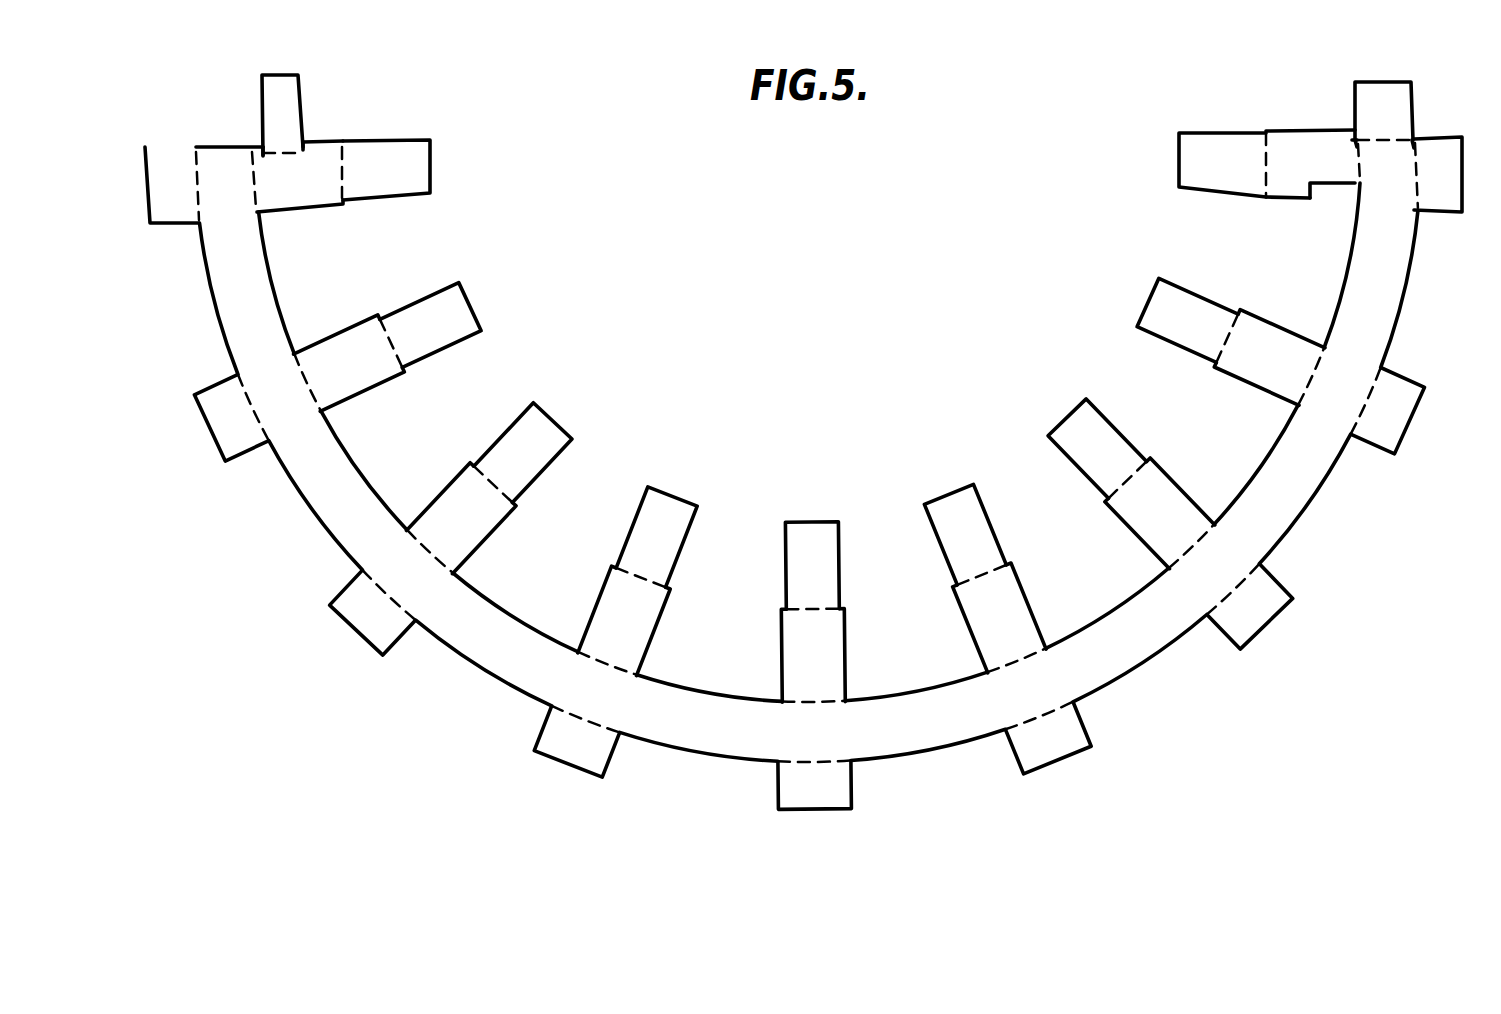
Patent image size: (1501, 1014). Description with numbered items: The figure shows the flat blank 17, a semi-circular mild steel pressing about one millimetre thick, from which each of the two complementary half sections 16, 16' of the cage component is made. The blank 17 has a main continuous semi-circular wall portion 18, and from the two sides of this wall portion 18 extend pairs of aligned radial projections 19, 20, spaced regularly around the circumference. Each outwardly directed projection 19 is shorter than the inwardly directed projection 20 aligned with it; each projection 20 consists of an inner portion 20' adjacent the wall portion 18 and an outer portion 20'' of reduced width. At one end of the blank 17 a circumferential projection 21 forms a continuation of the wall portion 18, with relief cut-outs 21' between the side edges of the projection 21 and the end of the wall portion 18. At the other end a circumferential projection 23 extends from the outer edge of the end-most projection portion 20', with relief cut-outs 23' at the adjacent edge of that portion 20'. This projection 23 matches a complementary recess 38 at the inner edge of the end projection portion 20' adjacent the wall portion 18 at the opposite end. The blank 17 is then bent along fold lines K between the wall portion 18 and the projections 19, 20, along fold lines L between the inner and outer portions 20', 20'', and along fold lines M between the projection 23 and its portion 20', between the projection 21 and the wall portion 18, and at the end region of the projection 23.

The half section 16 is at (814, 456).
The half section 16' is at (808, 492).
The blank 17 is at (697, 782).
The main wall portion 18 is at (228, 210).
The radial projection 19 is at (245, 432).
The radial projection 20 is at (806, 379).
The inner portion 20' is at (806, 416).
The outer portion 20'' is at (804, 333).
The circumferential projection 21 is at (1419, 94).
The relief cut-out 21' is at (1317, 98).
The circumferential projection 23 is at (312, 110).
The relief cut-out 23' is at (309, 115).
The recess 38 is at (1335, 185).
The fold lines K is at (197, 192).
The fold lines L is at (807, 607).
The fold lines M is at (283, 157).